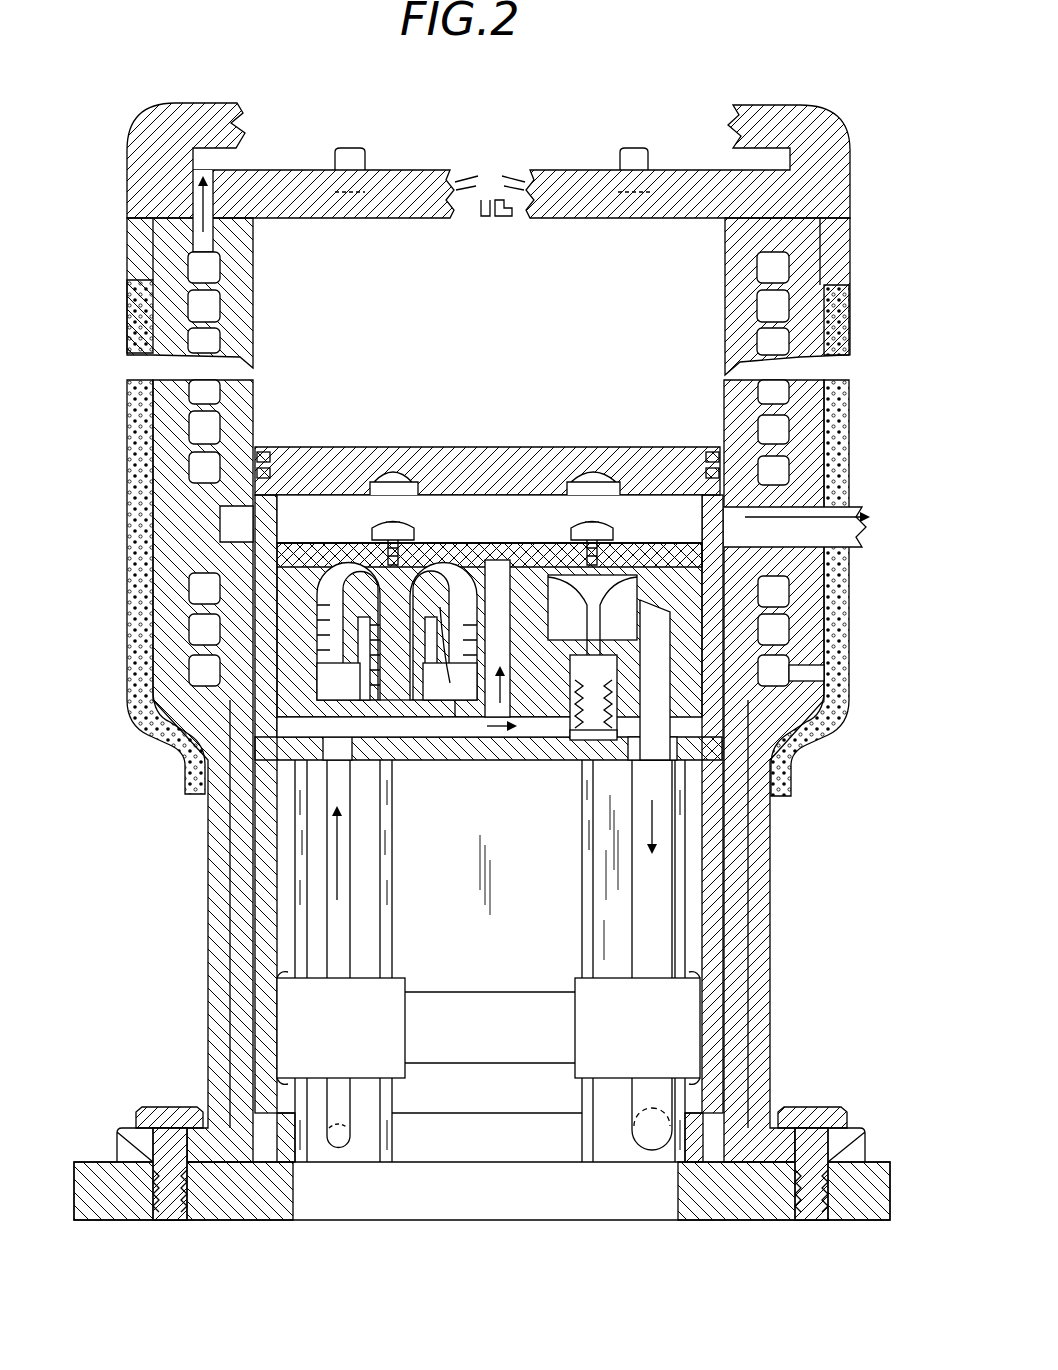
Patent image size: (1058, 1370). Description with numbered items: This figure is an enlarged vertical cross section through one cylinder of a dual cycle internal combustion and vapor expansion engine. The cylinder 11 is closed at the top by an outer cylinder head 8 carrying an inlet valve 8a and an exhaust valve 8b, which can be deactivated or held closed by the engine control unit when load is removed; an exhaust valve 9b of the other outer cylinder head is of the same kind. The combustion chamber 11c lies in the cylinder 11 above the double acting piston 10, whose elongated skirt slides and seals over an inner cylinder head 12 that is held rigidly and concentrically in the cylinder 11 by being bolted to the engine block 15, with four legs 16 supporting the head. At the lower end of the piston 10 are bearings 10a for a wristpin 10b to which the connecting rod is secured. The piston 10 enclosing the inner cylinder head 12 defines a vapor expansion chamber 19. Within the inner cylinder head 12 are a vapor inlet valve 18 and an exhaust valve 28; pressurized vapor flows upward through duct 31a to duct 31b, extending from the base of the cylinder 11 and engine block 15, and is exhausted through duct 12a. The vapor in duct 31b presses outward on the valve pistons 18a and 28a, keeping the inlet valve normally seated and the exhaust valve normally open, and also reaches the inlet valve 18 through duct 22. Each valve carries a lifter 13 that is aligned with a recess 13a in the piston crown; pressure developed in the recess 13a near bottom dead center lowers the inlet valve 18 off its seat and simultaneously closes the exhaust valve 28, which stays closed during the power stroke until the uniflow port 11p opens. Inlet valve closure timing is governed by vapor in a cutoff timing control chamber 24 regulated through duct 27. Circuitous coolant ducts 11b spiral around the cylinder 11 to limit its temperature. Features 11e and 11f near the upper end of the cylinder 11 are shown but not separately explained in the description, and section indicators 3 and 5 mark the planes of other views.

The outer cylinder head 8 is at (150, 148).
The inlet valve 8a is at (358, 160).
The exhaust valve 8b is at (640, 160).
The cover flange portion 11f is at (217, 150).
The passage 11e is at (190, 185).
The cylinder 11 is at (255, 278).
The coolant duct 11b is at (205, 338).
The exhaust valve 9b is at (128, 578).
The uniflow port 11p is at (834, 531).
The combustion chamber 11c is at (812, 672).
The section line 3 is at (120, 507).
The section line 5 is at (144, 1006).
The piston 10 is at (483, 447).
The vapor expansion chamber 19 is at (489, 519).
The actuator or lifter 13 is at (410, 540).
The recess 13a is at (375, 493).
The inner cylinder head 12 is at (295, 603).
The vapor inlet valve 18 is at (352, 548).
The cutoff timing control chamber 24 is at (343, 670).
The duct 27 is at (433, 629).
The valve piston 18a is at (397, 700).
The inlet duct 22 is at (500, 597).
The exhaust valve 28 is at (640, 563).
The valve piston 28a is at (585, 740).
The exhaust duct 12a is at (632, 903).
The duct 31b is at (455, 722).
The legs 16 is at (387, 793).
The duct 31a is at (350, 907).
The bearings 10a is at (298, 1022).
The wristpin 10b is at (442, 1040).
The engine block 15 is at (98, 1160).